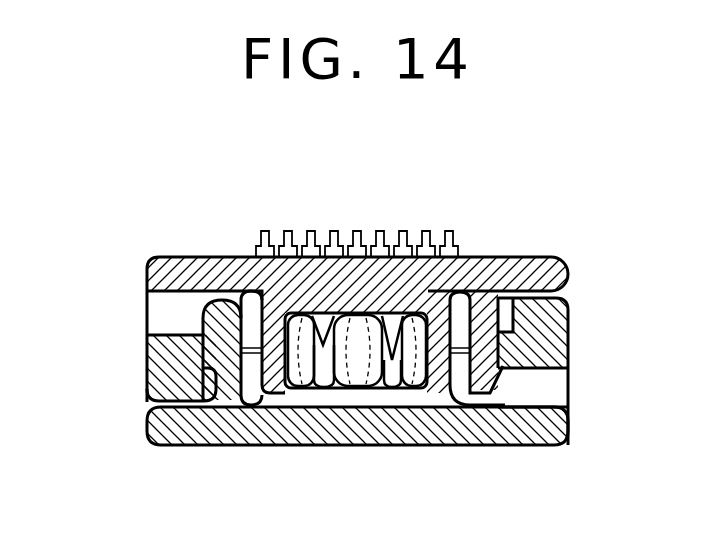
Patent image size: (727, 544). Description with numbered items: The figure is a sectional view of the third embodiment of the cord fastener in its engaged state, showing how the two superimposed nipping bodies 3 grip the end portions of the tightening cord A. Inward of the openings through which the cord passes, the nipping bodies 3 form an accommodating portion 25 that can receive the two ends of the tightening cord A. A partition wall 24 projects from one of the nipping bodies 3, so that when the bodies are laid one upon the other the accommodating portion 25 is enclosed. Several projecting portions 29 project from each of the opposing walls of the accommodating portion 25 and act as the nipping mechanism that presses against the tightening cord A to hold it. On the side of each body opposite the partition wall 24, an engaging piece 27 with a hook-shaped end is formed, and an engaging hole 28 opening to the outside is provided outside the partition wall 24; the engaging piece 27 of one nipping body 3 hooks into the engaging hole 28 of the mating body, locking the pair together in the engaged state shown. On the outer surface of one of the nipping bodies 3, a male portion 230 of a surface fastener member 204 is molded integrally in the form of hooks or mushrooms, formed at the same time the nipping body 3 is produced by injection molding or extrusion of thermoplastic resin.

The nipping body 3 is at (348, 337).
The partition wall 24 is at (503, 258).
The accommodating portion 25 is at (400, 392).
The engaging piece 27 is at (213, 317).
The engaging hole 28 is at (183, 330).
The projecting portion 29 is at (390, 317).
The surface fastener member 204 is at (360, 222).
The male portion 230 is at (290, 230).
The tightening cord A is at (294, 430).